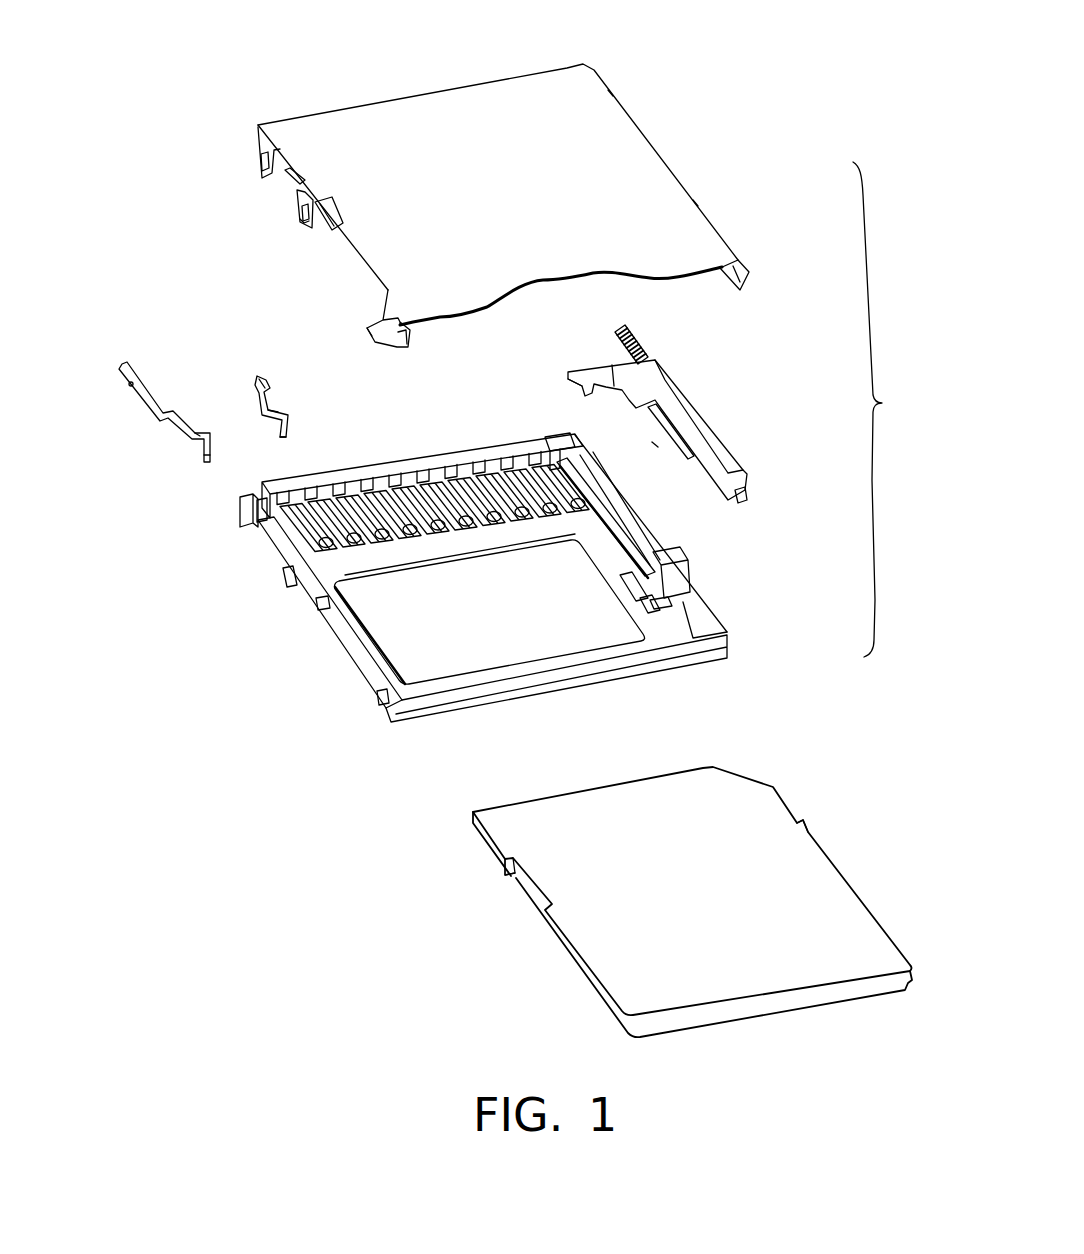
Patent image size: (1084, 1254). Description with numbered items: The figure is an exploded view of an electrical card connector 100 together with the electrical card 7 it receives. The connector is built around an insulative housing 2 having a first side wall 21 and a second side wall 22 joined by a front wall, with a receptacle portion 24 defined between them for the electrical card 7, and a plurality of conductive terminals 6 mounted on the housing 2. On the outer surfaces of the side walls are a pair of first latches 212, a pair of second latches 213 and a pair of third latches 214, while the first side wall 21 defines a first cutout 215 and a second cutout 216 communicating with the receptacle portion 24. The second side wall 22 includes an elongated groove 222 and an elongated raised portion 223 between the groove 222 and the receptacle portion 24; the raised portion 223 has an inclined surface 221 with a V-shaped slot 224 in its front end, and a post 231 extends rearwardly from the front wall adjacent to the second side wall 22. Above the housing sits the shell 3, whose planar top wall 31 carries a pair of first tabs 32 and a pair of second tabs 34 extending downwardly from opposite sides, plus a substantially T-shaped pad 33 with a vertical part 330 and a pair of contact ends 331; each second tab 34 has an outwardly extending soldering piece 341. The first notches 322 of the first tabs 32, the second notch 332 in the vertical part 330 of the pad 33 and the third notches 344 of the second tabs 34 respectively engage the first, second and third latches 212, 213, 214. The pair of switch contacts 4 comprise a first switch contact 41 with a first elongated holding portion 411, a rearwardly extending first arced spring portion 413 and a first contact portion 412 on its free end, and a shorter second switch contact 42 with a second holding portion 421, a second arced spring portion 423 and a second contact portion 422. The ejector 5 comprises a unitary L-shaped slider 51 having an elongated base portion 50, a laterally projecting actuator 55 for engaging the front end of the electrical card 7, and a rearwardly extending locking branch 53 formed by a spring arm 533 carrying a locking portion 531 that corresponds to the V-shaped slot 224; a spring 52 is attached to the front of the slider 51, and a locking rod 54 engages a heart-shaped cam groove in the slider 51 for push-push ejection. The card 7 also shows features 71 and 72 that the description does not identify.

The electrical card connector 100 is at (889, 409).
The insulative housing 2 is at (472, 585).
The first side wall 21 is at (355, 660).
The first latches 212 is at (245, 530).
The second latches 213 is at (290, 583).
The third latches 214 is at (369, 732).
The first cutout 215 is at (320, 603).
The second cutout 216 is at (272, 528).
The second side wall 22 is at (684, 599).
The inclined surface 221 is at (668, 600).
The elongated groove 222 is at (610, 535).
The elongated raised portion 223 is at (627, 577).
The V-shaped slot 224 is at (647, 605).
The post 231 is at (548, 462).
The receptacle portion 24 is at (527, 640).
The shell 3 is at (482, 200).
The planar top wall 31 is at (487, 108).
The first tabs 32 is at (225, 128).
The first notch 322 is at (262, 165).
The T-shaped pad 33 is at (271, 226).
The vertical part 330 is at (307, 223).
The contact ends 331 is at (333, 232).
The second notch 332 is at (303, 222).
The second tabs 34 is at (354, 337).
The soldering piece 341 is at (366, 333).
The third notch 344 is at (404, 345).
The switch contacts 4 is at (214, 412).
The first switch contact 41 is at (135, 424).
The first elongated holding portion 411 is at (130, 388).
The first contact portion 412 is at (203, 465).
The first arced spring portion 413 is at (196, 431).
The second switch contact 42 is at (298, 412).
The second holding portion 421 is at (262, 383).
The second contact portion 422 is at (285, 440).
The second arced spring portion 423 is at (280, 412).
The ejector 5 is at (688, 402).
The elongated base portion 50 is at (688, 419).
The L-shaped slider 51 is at (663, 373).
The spring 52 is at (640, 338).
The locking branch 53 is at (720, 458).
The locking portion 531 is at (735, 490).
The spring arm 533 is at (668, 432).
The locking rod 54 is at (685, 558).
The actuator 55 is at (590, 372).
The conductive terminals 6 is at (307, 542).
The electrical card 7 is at (684, 902).
The notch 71 is at (810, 830).
The write-protect notch 72 is at (527, 885).